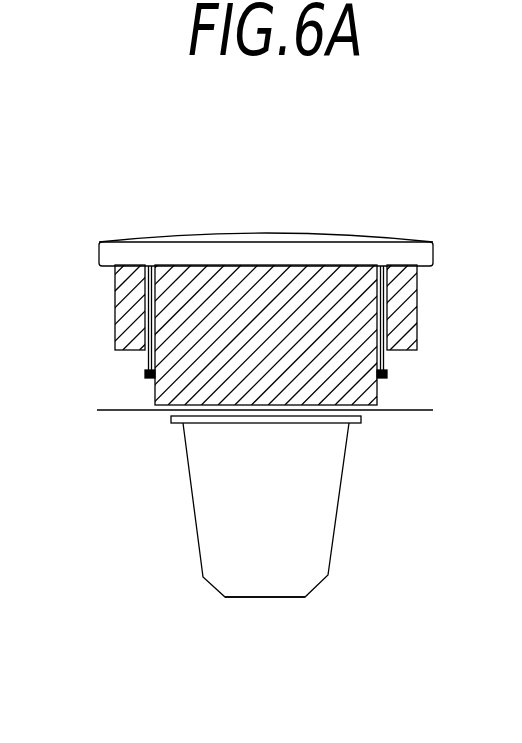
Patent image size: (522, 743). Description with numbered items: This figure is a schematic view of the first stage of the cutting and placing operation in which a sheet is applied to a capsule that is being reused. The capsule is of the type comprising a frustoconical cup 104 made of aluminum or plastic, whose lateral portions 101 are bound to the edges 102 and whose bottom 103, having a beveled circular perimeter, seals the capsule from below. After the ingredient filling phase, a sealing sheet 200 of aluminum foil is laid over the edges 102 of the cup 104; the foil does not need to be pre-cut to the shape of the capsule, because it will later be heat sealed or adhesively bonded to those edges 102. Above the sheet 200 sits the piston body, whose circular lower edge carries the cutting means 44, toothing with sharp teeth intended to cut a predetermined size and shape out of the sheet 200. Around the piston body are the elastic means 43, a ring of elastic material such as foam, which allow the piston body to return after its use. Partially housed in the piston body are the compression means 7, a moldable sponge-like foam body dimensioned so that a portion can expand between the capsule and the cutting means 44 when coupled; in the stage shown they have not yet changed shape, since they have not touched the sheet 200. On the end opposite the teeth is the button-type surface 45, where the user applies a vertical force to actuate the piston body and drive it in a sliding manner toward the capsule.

The button-type surface 45 is at (187, 235).
The elastic means 43 is at (115, 305).
The compression means 7 is at (148, 386).
The cutting means 44 is at (378, 377).
The sealing sheet 200 is at (140, 412).
The edges 102 is at (362, 417).
The lateral portions 101 is at (198, 532).
The bottom 103 is at (273, 598).
The cup 104 is at (289, 490).